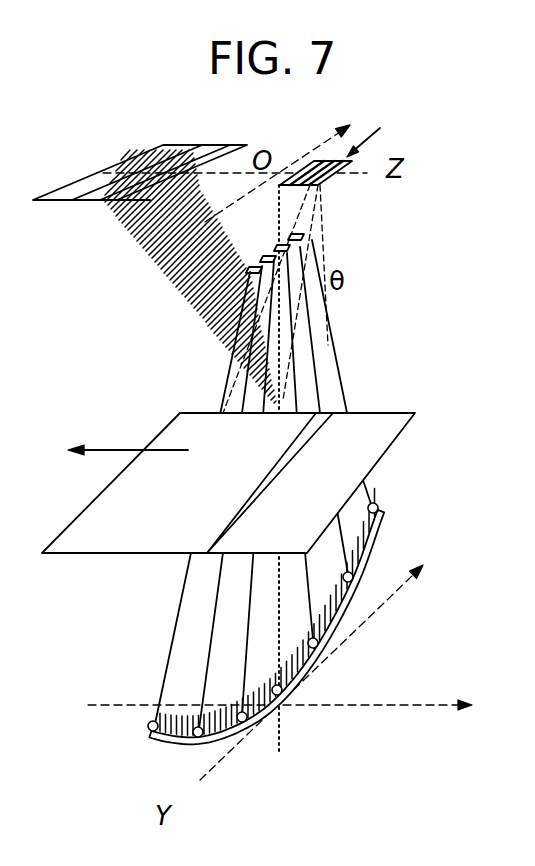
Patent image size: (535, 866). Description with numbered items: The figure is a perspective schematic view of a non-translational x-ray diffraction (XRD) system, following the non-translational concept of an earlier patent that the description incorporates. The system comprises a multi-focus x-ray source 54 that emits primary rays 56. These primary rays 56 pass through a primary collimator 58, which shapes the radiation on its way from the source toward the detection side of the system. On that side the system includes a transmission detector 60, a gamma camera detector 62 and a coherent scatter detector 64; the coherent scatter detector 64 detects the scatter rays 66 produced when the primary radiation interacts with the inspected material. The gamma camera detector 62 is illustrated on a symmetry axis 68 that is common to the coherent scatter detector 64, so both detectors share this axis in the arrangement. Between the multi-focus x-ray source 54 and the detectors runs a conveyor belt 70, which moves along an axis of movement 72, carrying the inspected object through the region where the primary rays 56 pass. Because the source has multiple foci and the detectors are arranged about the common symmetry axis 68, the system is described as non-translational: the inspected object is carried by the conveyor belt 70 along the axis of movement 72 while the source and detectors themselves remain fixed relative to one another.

The multi-focus x-ray source 54 is at (166, 750).
The primary rays 56 is at (172, 643).
The primary collimator 58 is at (368, 527).
The transmission detector 60 is at (246, 280).
The gamma camera detector 62 is at (130, 160).
The coherent scatter detector 64 is at (382, 128).
The scatter rays 66 is at (322, 237).
The symmetry axis 68 is at (348, 173).
The conveyor belt 70 is at (397, 438).
The axis of movement 72 is at (112, 451).